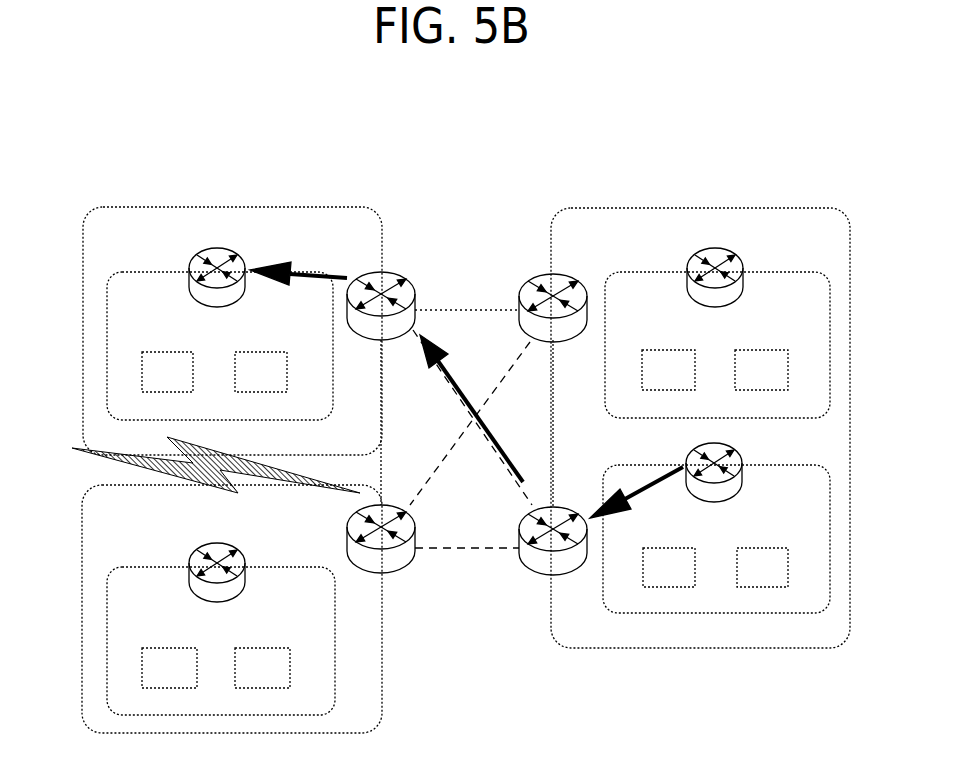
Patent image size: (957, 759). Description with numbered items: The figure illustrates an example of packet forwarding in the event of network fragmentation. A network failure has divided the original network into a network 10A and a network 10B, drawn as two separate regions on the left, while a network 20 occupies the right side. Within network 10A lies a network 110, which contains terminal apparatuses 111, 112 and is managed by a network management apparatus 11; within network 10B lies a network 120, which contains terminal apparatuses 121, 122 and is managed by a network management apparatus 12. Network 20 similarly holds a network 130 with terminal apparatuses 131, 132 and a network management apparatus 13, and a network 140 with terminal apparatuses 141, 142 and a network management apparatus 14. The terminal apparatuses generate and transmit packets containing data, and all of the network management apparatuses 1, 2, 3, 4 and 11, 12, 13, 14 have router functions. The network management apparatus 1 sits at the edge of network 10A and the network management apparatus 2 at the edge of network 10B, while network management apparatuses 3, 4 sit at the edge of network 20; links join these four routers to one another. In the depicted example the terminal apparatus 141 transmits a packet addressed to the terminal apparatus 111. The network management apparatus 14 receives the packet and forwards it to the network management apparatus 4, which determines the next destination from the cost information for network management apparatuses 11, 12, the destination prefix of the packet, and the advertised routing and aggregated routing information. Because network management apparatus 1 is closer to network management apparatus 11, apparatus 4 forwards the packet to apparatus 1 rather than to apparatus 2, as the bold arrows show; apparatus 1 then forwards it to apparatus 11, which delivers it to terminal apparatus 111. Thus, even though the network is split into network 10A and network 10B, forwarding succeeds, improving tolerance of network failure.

The network management apparatus 1 is at (408, 274).
The network management apparatus 2 is at (402, 503).
The network management apparatus 3 is at (532, 277).
The network management apparatus 4 is at (538, 505).
The network 10A is at (337, 190).
The network 10B is at (382, 650).
The network 20 is at (798, 208).
The network management apparatus 11 is at (245, 262).
The network management apparatus 12 is at (245, 562).
The network management apparatus 13 is at (744, 270).
The network management apparatus 14 is at (744, 463).
The network 110 is at (300, 272).
The network 120 is at (288, 567).
The network 130 is at (787, 272).
The network 140 is at (787, 463).
The terminal apparatus 111 is at (163, 351).
The terminal apparatus 112 is at (257, 351).
The terminal apparatus 121 is at (163, 648).
The terminal apparatus 122 is at (257, 648).
The terminal apparatus 131 is at (661, 350).
The terminal apparatus 132 is at (760, 350).
The terminal apparatus 141 is at (664, 548).
The terminal apparatus 142 is at (757, 548).